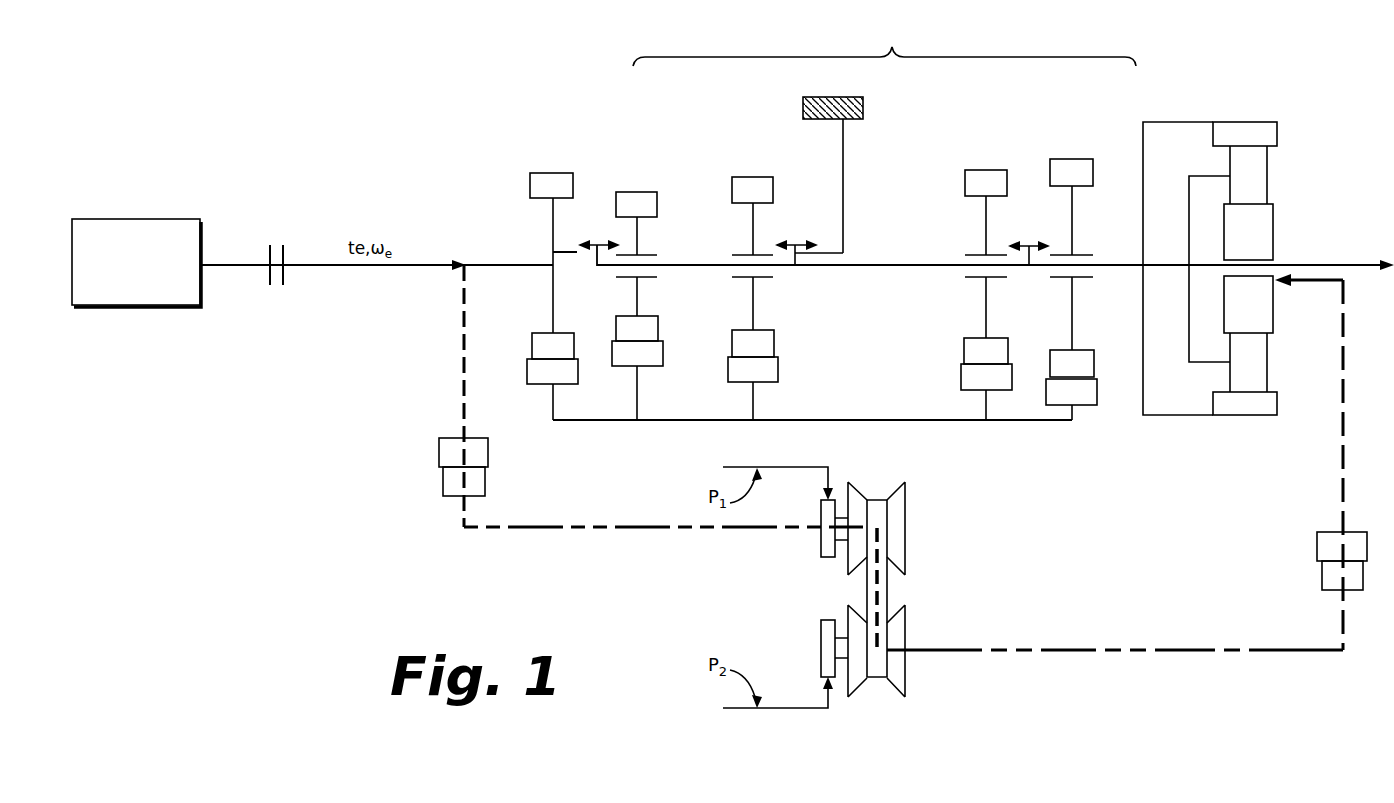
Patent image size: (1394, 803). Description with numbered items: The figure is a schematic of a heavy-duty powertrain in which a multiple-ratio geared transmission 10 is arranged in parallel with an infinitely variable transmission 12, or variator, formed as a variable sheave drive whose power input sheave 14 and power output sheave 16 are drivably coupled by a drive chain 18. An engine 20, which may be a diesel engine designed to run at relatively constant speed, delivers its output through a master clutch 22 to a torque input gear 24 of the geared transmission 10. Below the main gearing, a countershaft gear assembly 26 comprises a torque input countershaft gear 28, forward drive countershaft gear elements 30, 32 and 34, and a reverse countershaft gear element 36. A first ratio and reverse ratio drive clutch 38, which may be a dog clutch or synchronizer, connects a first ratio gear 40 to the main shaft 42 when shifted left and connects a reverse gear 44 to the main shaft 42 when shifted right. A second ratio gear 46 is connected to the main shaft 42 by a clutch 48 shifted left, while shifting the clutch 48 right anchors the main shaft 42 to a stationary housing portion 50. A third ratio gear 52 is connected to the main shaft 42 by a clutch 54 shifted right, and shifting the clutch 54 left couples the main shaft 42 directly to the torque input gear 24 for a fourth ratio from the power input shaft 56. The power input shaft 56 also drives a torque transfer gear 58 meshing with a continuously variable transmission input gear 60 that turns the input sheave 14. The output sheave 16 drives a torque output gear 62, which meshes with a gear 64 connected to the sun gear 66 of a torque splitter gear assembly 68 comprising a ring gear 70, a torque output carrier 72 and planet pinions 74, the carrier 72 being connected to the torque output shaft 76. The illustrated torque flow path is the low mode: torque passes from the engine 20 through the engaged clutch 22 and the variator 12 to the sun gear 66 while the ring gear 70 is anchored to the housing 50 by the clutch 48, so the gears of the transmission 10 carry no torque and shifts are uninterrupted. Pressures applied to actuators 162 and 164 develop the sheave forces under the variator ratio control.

The multiple-ratio geared transmission 10 is at (884, 43).
The infinitely variable transmission 12 is at (894, 587).
The power input sheave 14 is at (905, 497).
The power output sheave 16 is at (905, 675).
The drive chain 18 is at (865, 583).
The engine 20 is at (150, 219).
The master clutch 22 is at (286, 278).
The torque input gear 24 is at (552, 186).
The countershaft gear assembly 26 is at (877, 412).
The torque input countershaft gear 28 is at (532, 375).
The forward drive countershaft gear element 30 is at (968, 375).
The forward drive countershaft gear element 32 is at (770, 370).
The forward drive countershaft gear element 34 is at (655, 357).
The reverse countershaft gear element 36 is at (1082, 398).
The first ratio and reverse ratio drive clutch 38 is at (1030, 243).
The first ratio gear 40 is at (985, 182).
The main shaft 42 is at (893, 262).
The reverse gear 44 is at (1074, 172).
The second ratio gear 46 is at (757, 190).
The clutch 48 is at (797, 243).
The stationary housing portion 50 is at (863, 112).
The third ratio gear 52 is at (640, 206).
The clutch 54 is at (600, 242).
The power input shaft 56 is at (441, 262).
The torque transfer gear 58 is at (442, 451).
The continuously variable transmission input gear 60 is at (481, 483).
The torque output gear 62 is at (1322, 571).
The gear 64 is at (1322, 542).
The sun gear 66 is at (1272, 234).
The torque splitter gear assembly 68 is at (1250, 245).
The ring gear 70 is at (1232, 132).
The torque output carrier 72 is at (1188, 340).
The planet pinions 74 is at (1262, 191).
The torque output shaft 76 is at (1357, 263).
The actuator 162 is at (819, 548).
The actuator 164 is at (819, 628).